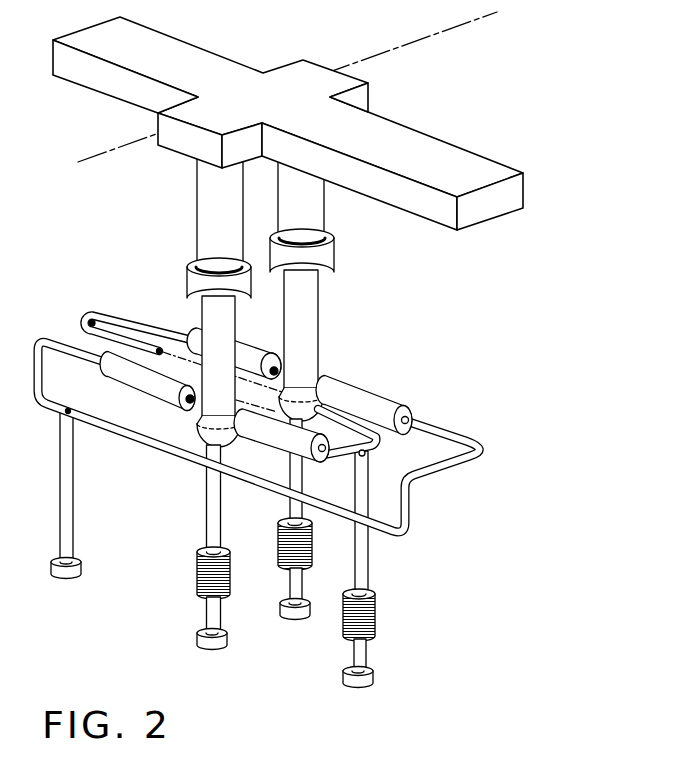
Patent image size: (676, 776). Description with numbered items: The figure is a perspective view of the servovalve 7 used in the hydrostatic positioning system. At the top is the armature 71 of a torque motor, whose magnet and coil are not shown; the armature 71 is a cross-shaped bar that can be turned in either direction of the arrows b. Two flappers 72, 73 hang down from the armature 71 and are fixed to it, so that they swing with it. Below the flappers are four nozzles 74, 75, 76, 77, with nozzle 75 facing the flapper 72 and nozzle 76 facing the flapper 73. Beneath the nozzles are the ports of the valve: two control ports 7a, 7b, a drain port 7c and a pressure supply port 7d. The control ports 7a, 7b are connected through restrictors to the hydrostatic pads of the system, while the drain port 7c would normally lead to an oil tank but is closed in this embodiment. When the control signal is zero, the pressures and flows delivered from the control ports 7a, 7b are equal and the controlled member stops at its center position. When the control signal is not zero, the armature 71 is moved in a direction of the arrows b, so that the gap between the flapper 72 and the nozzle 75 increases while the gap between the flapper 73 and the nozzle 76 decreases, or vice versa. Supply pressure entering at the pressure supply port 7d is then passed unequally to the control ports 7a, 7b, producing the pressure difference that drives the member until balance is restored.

The servovalve 7 is at (291, 131).
The armature 71 is at (498, 212).
The flapper 72 is at (312, 313).
The flapper 73 is at (204, 311).
The nozzle 74 is at (385, 405).
The nozzle 75 is at (247, 350).
The nozzle 76 is at (282, 440).
The nozzle 77 is at (139, 385).
The control port 7a is at (281, 607).
The control port 7b is at (226, 640).
The drain port 7c is at (81, 570).
The pressure supply port 7d is at (372, 681).
The arrows b is at (376, 71).